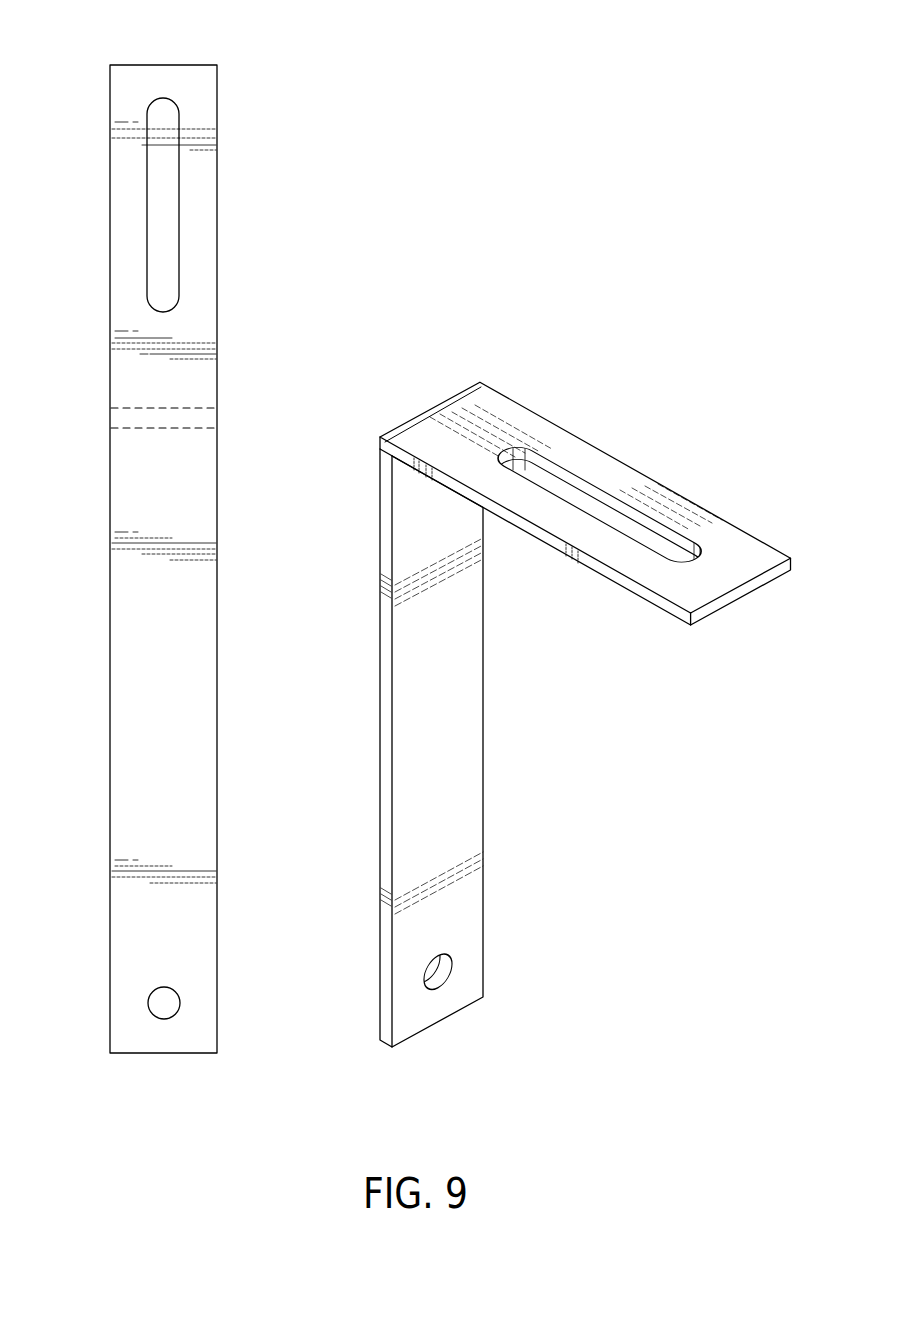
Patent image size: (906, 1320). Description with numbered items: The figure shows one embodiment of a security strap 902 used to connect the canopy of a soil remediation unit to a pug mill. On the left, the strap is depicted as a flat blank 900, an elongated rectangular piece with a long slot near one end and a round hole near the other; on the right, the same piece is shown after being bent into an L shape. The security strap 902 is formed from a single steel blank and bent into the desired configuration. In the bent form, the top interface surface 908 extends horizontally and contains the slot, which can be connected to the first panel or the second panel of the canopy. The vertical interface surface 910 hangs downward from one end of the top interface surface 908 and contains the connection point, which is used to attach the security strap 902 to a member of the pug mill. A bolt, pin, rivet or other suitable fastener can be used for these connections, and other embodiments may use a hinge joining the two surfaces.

The flat bracket blank 900 is at (168, 559).
The security strap 902 is at (478, 162).
The top interface surface 908 is at (585, 503).
The vertical interface surface 910 is at (458, 748).